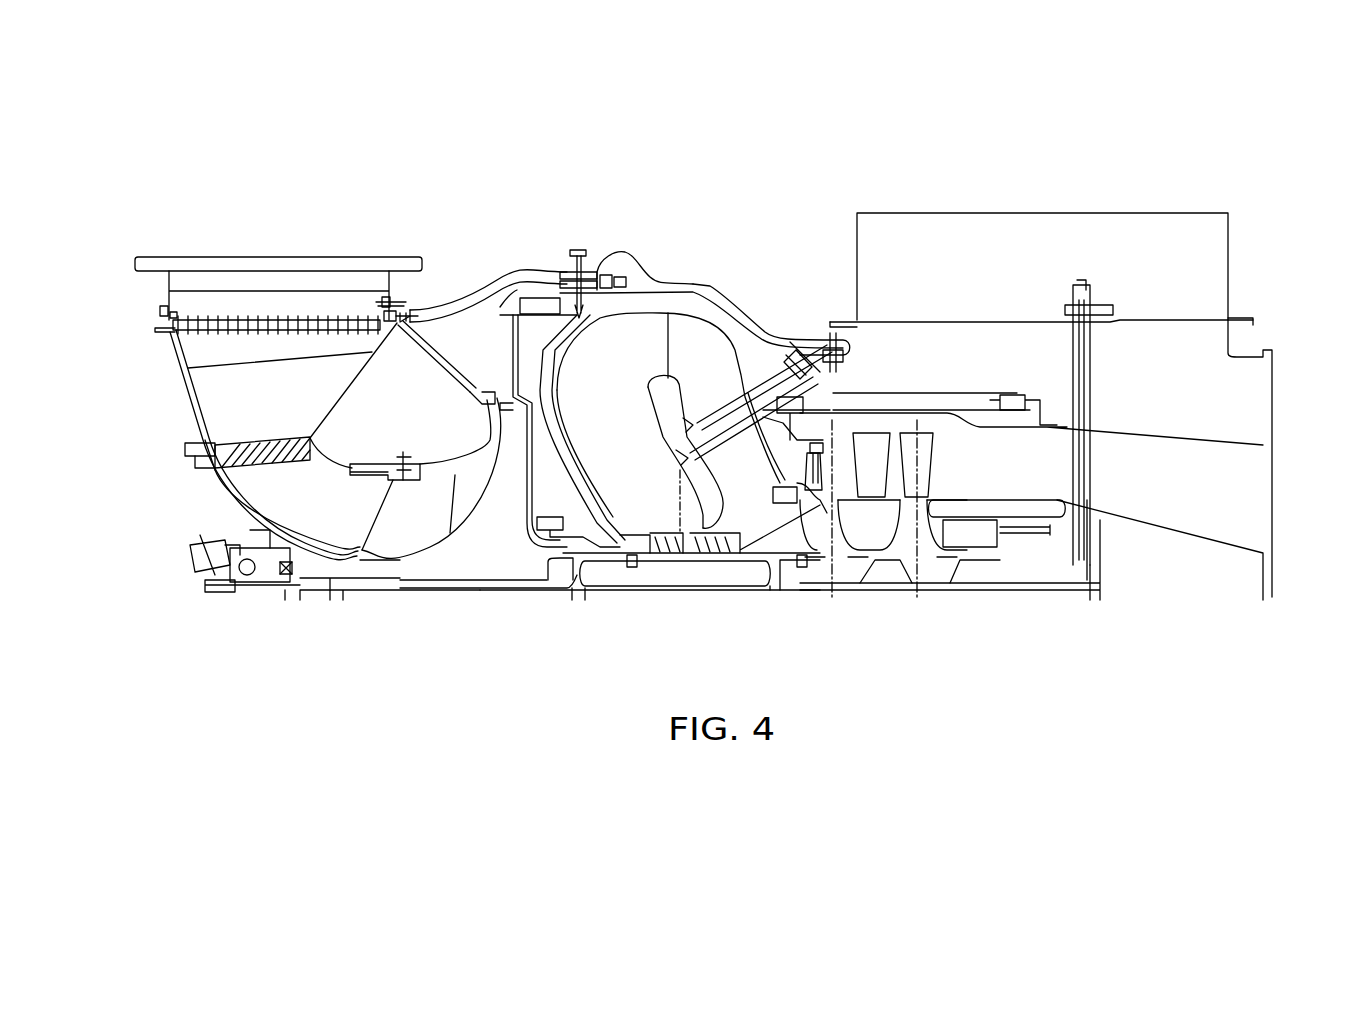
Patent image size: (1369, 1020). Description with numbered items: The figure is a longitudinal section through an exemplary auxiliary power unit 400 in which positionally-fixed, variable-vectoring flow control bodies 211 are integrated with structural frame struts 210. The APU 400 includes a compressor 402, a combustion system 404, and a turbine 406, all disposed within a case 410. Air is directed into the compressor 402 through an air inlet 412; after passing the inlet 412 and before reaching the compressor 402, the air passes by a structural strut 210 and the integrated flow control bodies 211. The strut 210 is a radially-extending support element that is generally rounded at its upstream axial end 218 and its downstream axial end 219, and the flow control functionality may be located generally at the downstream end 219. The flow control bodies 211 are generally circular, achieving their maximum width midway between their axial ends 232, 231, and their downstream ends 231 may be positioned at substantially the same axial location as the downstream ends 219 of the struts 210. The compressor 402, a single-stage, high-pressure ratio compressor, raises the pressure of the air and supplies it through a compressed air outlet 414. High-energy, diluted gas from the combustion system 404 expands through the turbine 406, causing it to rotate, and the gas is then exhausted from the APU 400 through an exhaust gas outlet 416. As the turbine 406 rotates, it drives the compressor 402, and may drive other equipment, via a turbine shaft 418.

The auxiliary power unit 400 is at (627, 178).
The air inlet 412 is at (297, 256).
The upstream axial end 218 is at (208, 367).
The strut 210 is at (200, 400).
The flow control body 211 is at (218, 458).
The axial end of flow control body 232 is at (292, 434).
The downstream axial end of strut 219 is at (383, 478).
The downstream axial end of flow control body 231 is at (277, 464).
The compressor 402 is at (404, 446).
The compressed air outlet 414 is at (540, 300).
The case 410 is at (625, 262).
The combustion system 404 is at (700, 318).
The turbine 406 is at (878, 392).
The exhaust gas outlet 416 is at (1272, 403).
The turbine shaft 418 is at (742, 592).